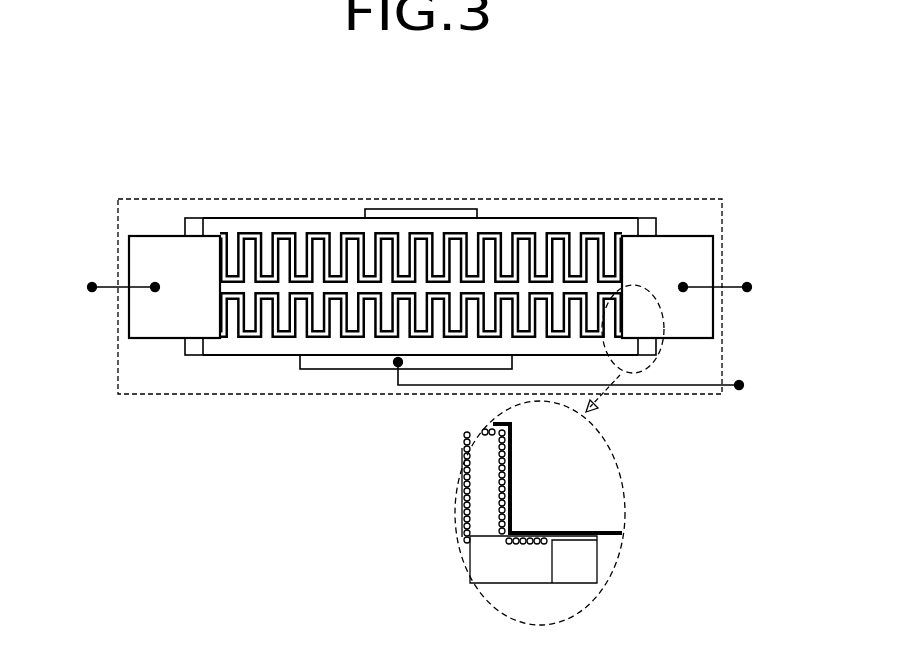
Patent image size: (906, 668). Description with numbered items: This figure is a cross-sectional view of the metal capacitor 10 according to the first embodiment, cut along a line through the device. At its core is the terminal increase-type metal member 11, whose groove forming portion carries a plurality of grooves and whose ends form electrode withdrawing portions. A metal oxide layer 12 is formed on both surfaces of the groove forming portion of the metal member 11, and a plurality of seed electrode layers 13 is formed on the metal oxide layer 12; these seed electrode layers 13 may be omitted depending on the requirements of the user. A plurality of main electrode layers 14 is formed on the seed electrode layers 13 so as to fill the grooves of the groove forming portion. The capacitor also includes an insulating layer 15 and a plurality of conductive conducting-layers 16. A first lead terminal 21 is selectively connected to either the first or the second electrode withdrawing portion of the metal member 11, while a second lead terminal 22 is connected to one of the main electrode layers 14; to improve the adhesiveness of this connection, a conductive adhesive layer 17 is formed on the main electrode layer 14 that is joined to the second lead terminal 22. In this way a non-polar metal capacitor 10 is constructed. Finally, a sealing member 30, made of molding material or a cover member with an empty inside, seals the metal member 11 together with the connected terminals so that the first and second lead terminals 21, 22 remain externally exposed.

The metal capacitor 10 is at (352, 152).
The terminal increase-type metal member 11 is at (147, 246).
The metal oxide layer 12 is at (140, 338).
The seed electrode layer 13 is at (495, 468).
The main electrode layer 14 is at (400, 223).
The insulating layer 15 is at (197, 215).
The conductive conducting-layer 16 is at (448, 212).
The conductive adhesive layer 17 is at (373, 362).
The first lead terminal 21 is at (92, 287).
The second lead terminal 22 is at (739, 385).
The sealing member 30 is at (540, 209).